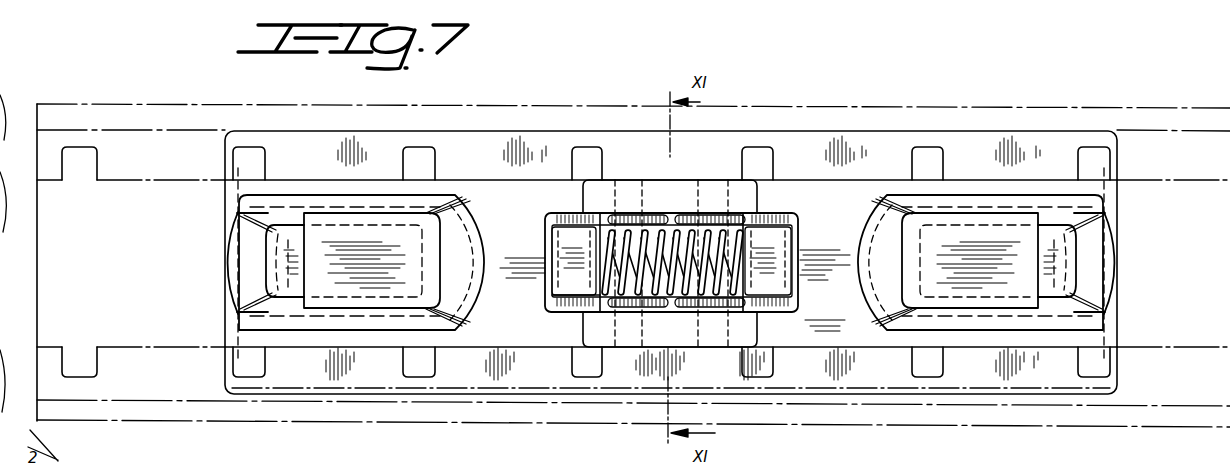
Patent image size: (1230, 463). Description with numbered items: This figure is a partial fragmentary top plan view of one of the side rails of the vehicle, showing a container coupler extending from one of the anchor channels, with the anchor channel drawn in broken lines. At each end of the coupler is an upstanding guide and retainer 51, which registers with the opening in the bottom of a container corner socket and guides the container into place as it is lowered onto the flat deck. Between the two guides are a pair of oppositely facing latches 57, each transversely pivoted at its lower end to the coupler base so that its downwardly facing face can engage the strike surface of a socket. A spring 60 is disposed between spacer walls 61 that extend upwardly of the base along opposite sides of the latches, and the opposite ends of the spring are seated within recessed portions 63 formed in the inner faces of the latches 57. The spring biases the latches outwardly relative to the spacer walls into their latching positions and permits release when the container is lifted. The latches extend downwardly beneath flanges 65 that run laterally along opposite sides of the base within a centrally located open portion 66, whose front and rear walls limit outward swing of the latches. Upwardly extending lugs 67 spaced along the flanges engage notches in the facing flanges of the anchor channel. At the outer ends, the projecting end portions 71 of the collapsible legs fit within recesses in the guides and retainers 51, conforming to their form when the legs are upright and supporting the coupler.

The upstanding guide and retainer 51 is at (300, 200).
The latch 57 is at (563, 213).
The spring 60 is at (653, 230).
The spacer wall 61 is at (688, 190).
The recessed portion 63 is at (608, 232).
The flange 65 is at (601, 313).
The open portion 66 is at (552, 292).
The lug 67 is at (245, 357).
The projecting end portion 71 is at (248, 256).